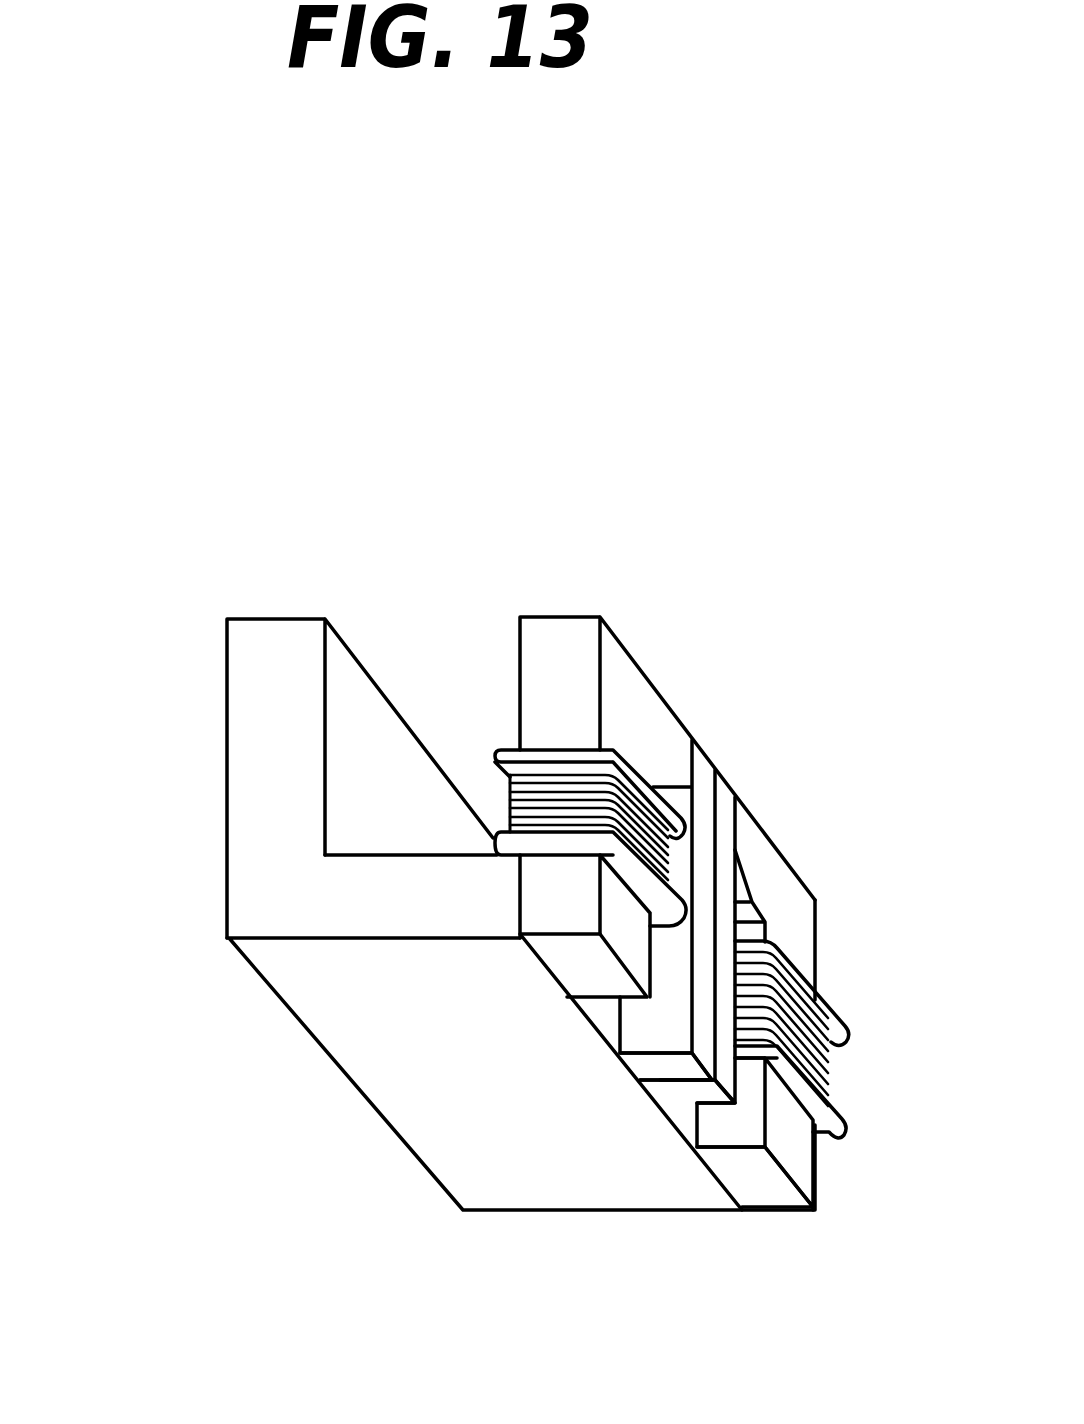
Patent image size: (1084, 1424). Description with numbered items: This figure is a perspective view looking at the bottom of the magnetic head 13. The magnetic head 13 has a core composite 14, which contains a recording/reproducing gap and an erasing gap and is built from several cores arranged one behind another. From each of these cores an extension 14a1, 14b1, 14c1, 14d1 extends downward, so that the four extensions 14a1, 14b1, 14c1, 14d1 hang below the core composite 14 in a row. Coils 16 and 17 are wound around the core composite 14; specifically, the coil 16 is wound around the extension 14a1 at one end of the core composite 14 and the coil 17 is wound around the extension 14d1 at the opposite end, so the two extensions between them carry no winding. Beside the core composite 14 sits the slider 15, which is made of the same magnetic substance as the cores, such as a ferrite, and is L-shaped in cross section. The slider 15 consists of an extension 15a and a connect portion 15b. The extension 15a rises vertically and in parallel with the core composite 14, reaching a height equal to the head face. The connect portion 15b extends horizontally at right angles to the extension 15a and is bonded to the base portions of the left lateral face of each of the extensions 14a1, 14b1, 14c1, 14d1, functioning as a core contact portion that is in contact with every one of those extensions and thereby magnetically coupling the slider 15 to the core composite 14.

The magnetic head 13 is at (495, 302).
The core composite 14 is at (627, 597).
The slider 15 is at (303, 583).
The extension 15a is at (242, 723).
The connect portion 15b is at (566, 1213).
The coil 16 is at (653, 787).
The coil 17 is at (798, 1030).
The extension 14a1 is at (568, 968).
The extension 14b1 is at (652, 1067).
The extension 14c1 is at (683, 1093).
The extension 14d1 is at (780, 1197).